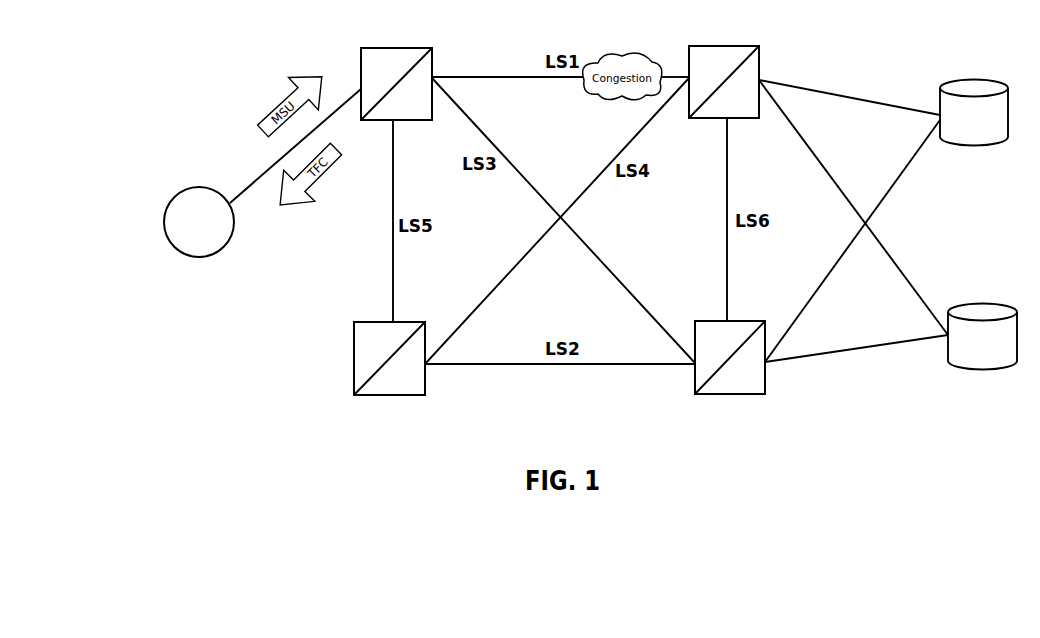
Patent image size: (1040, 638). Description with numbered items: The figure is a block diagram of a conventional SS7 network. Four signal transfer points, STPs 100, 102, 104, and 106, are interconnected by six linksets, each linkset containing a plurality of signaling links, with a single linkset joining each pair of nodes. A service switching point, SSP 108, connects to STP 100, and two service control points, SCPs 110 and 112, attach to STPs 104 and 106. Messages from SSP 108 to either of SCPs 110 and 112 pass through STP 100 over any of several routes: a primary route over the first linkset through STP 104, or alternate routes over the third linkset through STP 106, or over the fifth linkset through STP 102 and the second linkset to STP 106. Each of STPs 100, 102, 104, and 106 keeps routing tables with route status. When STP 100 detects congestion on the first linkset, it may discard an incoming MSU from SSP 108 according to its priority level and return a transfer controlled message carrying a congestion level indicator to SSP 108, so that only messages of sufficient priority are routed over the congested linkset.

The signal transfer point (STP) 100 is at (412, 47).
The signal transfer point (STP) 102 is at (410, 321).
The signal transfer point (STP) 104 is at (742, 45).
The signal transfer point (STP) 106 is at (750, 320).
The service switching point (SSP) 108 is at (205, 186).
The service control point (SCP) 110 is at (970, 81).
The service control point (SCP) 112 is at (977, 303).